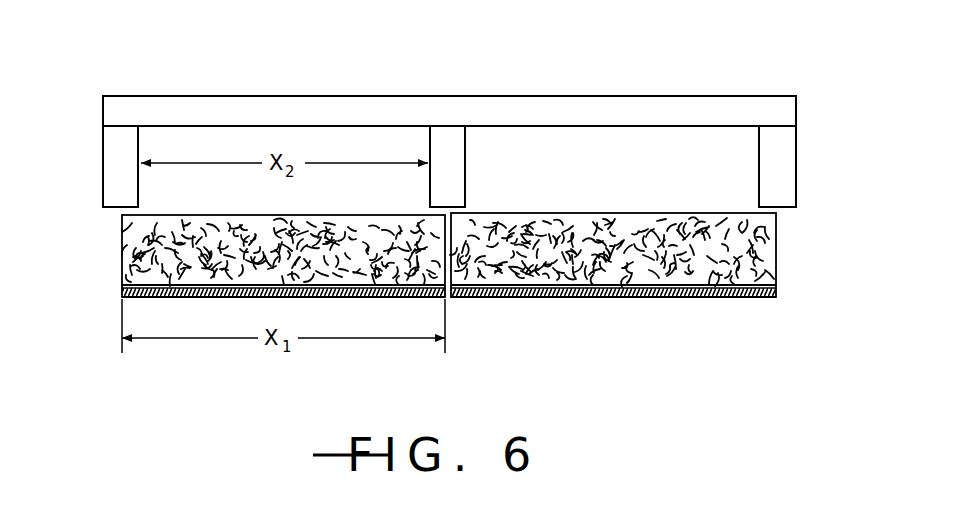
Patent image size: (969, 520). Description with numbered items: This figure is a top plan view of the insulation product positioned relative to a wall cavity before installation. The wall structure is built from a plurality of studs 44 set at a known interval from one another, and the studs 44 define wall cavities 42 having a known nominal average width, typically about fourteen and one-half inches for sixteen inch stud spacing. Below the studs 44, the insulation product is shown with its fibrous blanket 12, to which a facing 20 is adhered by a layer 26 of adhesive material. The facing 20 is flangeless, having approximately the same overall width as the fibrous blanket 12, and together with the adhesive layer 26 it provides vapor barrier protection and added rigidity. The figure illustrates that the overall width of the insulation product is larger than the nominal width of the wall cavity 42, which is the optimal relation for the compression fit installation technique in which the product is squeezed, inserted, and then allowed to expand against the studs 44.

The fibrous blanket 12 is at (128, 252).
The facing 20 is at (405, 298).
The adhesive layer 26 is at (122, 285).
The wall cavity 42 is at (605, 163).
The stud 44 is at (108, 177).